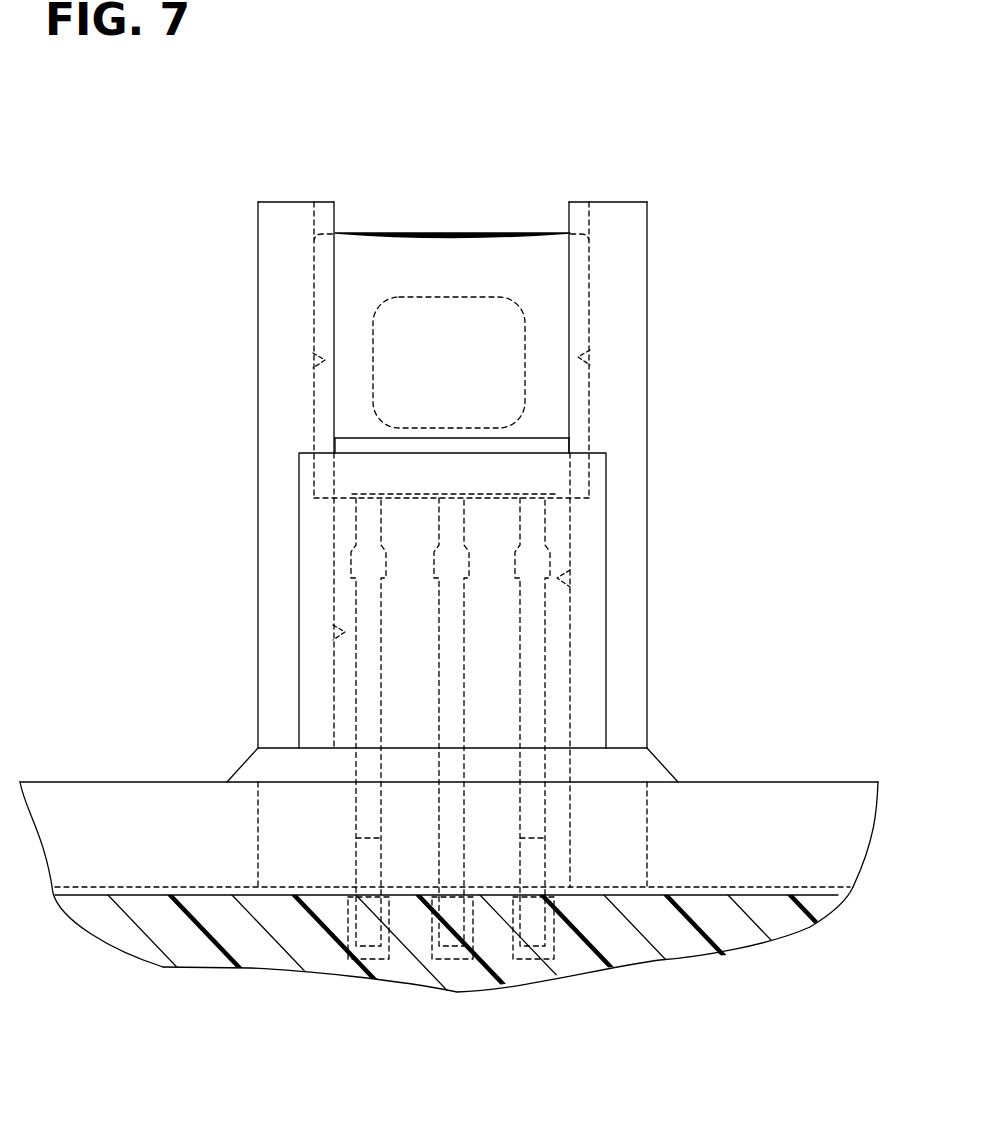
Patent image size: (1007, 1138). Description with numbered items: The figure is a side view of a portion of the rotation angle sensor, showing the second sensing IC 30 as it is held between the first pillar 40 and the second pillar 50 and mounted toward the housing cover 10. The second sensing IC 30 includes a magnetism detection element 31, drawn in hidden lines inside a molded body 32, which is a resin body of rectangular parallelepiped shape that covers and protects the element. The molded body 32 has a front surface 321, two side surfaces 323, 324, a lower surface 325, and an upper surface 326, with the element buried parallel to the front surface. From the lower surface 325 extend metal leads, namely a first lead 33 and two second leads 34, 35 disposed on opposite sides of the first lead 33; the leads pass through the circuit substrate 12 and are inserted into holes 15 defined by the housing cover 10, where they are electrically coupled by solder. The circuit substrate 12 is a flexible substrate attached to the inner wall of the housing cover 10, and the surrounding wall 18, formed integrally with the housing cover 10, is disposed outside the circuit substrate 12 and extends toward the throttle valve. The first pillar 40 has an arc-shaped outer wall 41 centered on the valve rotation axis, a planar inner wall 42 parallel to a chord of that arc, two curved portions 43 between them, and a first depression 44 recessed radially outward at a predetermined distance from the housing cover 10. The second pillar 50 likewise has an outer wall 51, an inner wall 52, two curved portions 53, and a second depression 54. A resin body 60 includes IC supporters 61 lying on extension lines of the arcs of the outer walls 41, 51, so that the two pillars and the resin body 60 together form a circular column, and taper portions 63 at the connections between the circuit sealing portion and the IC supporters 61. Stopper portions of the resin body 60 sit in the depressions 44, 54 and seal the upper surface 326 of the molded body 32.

The housing cover 10 is at (740, 935).
The circuit substrate 12 is at (817, 883).
The hole 15 is at (368, 960).
The surrounding wall 18 is at (82, 838).
The second sensing IC 30 is at (407, 262).
The magnetism detection element 31 is at (373, 402).
The molded body 32 is at (507, 262).
The front surface 321 is at (550, 400).
The side surface 323 is at (590, 315).
The side surface 324 is at (313, 320).
The lower surface 325 is at (480, 502).
The upper surface 326 is at (453, 232).
The first lead 33 is at (468, 643).
The second lead 34 is at (546, 703).
The second lead 35 is at (358, 697).
The first pillar 40 is at (622, 200).
The outer wall 41 is at (647, 250).
The inner wall 42 is at (557, 578).
The curved portion 43 is at (580, 280).
The first depression 44 is at (590, 352).
The second pillar 50 is at (302, 200).
The outer wall 51 is at (258, 244).
The inner wall 52 is at (333, 640).
The curved portion 53 is at (325, 285).
The second depression 54 is at (315, 360).
The resin body 60 is at (408, 577).
The IC supporter 61 is at (407, 533).
The taper portion 63 is at (240, 765).